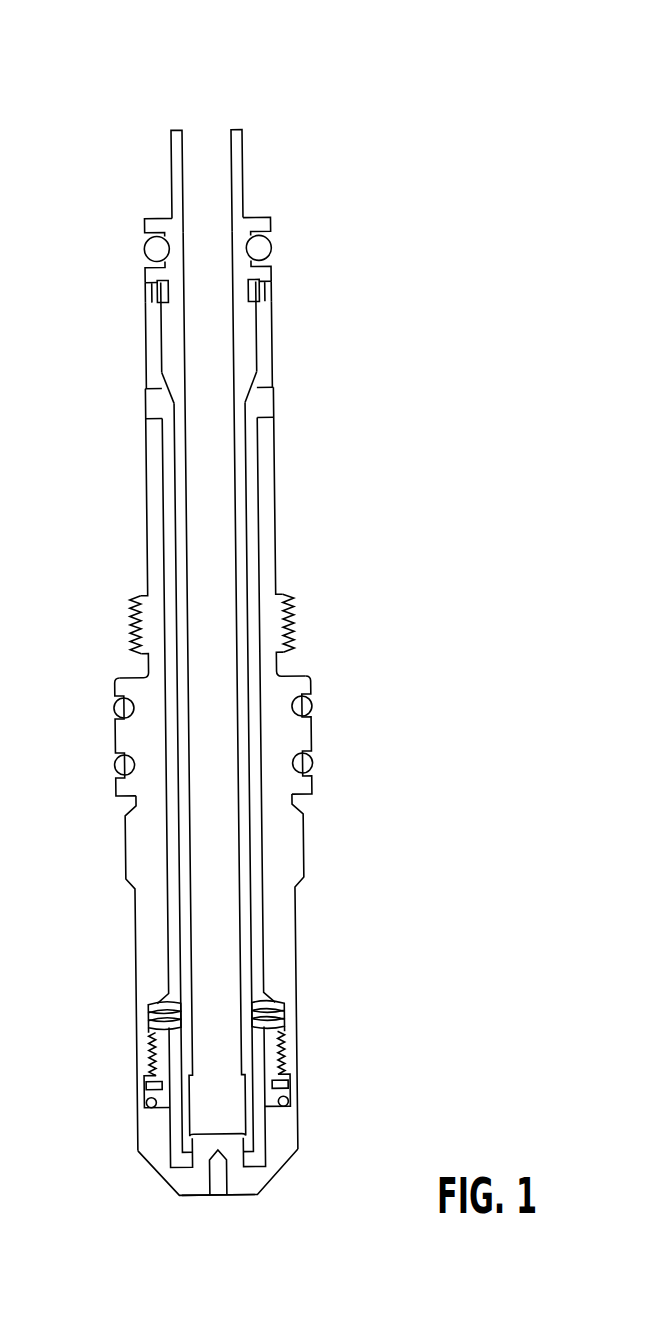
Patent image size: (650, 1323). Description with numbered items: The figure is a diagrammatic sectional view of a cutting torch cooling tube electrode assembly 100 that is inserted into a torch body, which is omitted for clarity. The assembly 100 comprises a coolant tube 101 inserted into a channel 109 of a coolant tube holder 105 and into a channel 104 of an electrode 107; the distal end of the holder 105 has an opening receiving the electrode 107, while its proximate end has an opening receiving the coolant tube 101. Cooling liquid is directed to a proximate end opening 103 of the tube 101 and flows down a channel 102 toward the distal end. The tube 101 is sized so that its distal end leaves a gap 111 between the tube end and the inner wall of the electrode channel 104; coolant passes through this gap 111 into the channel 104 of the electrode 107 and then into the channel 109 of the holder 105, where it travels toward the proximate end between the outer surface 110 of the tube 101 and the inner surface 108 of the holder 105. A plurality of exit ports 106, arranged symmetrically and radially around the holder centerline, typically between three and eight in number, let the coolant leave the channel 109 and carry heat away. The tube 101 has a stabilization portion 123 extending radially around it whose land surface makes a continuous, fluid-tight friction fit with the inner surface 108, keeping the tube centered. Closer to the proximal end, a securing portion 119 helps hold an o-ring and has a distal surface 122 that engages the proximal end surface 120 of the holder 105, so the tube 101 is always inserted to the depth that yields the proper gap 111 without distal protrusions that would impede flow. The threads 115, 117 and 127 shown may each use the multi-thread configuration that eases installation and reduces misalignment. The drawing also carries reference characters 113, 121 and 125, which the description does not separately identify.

The cutting torch cooling tube electrode assembly 100 is at (392, 70).
The coolant tube 101 is at (243, 155).
The channel 102 is at (215, 690).
The proximate end opening 103 is at (205, 140).
The channel 104 is at (170, 1133).
The coolant tube holder 105 is at (275, 470).
The exit ports 106 is at (270, 405).
The electrode 107 is at (177, 1195).
The inner surface 108 is at (150, 630).
The channel 109 is at (175, 895).
The outer surface 110 is at (180, 545).
The gap 111 is at (255, 1160).
The spray orifice 113 is at (222, 1196).
The threads 115 is at (285, 1050).
The threads 117 is at (290, 1015).
The securing portion 119 is at (143, 270).
The proximal end surface 120 is at (145, 277).
The washer 121 is at (152, 293).
The distal surface 122 is at (270, 290).
The stabilization portion 123 is at (246, 340).
The shoulder 125 is at (165, 405).
The threads 127 is at (290, 610).